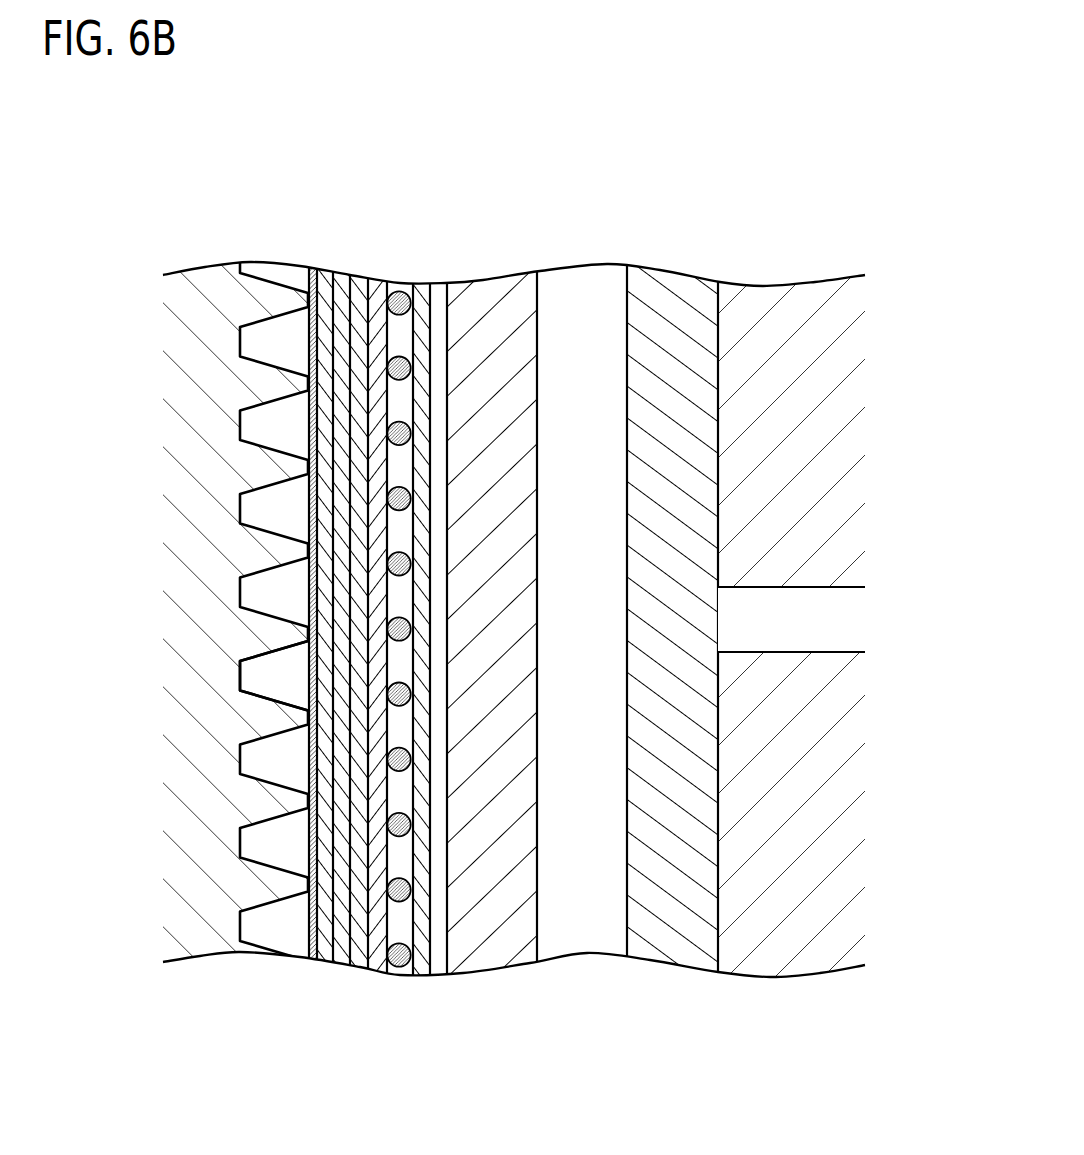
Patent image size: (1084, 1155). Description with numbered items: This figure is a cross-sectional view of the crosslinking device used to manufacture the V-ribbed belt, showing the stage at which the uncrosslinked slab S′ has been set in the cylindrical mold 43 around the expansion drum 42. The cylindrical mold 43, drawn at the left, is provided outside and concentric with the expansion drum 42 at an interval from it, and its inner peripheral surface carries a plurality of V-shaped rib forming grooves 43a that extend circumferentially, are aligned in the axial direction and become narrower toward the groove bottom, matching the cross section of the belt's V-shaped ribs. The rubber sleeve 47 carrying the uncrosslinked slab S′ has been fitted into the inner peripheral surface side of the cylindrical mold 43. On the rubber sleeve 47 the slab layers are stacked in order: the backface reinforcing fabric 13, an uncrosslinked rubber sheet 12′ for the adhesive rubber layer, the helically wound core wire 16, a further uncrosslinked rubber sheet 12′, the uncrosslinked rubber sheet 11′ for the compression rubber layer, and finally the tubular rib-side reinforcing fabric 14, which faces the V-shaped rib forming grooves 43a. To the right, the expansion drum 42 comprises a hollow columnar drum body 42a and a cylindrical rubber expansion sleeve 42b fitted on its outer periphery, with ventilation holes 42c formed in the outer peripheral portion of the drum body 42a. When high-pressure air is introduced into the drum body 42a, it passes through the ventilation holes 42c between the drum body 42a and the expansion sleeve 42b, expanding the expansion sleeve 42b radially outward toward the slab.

The cylindrical mold 43 is at (182, 552).
The V-shaped rib forming groove 43a is at (243, 679).
The rib-side reinforcing fabric 14 is at (312, 272).
The uncrosslinked rubber sheet for the compression rubber layer 11′ is at (357, 955).
The uncrosslinked rubber sheet for the adhesive rubber layer 12′ is at (383, 285).
The core wire 16 is at (399, 964).
The backface reinforcing fabric 13 is at (437, 298).
The rubber sleeve 47 is at (497, 958).
The expansion drum 42 is at (872, 382).
The drum body 42a is at (850, 776).
The expansion sleeve 42b is at (672, 946).
The ventilation hole 42c is at (834, 589).
The uncrosslinked slab S′ is at (299, 933).